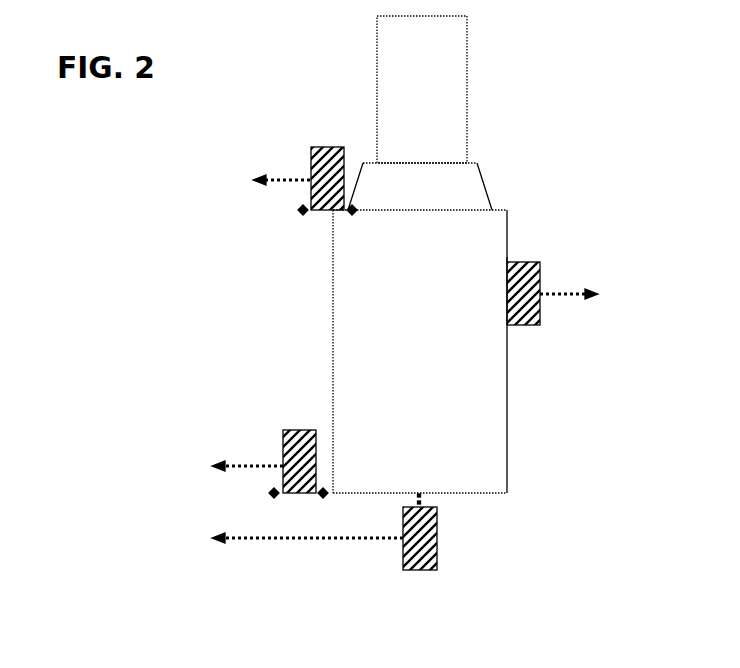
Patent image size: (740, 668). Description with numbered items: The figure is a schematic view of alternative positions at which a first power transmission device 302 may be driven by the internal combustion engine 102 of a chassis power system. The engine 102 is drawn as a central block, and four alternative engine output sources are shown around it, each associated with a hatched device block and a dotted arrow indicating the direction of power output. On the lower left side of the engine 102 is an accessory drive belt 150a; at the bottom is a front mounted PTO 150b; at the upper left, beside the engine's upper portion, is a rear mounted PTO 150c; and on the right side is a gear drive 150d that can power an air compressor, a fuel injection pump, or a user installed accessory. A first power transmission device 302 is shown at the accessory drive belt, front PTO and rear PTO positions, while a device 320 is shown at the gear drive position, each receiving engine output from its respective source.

The internal combustion engine 102 is at (507, 469).
The first power transmission device 302 is at (317, 150).
The sensor block 320 is at (540, 325).
The accessory drive belt 150a is at (320, 495).
The front mounted PTO 150b is at (432, 493).
The rear mounted PTO 150c is at (332, 213).
The gear drive 150d is at (507, 257).